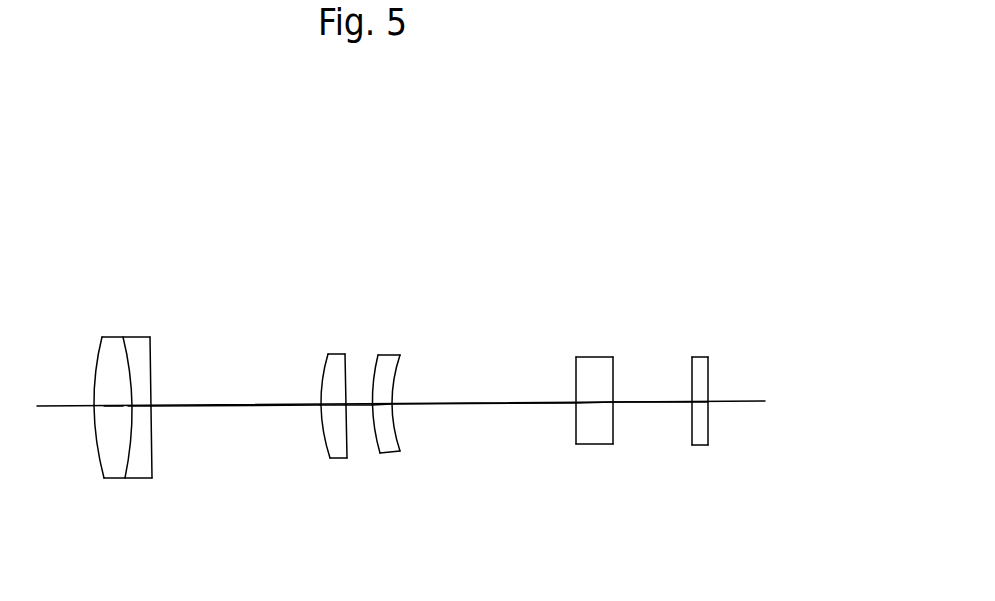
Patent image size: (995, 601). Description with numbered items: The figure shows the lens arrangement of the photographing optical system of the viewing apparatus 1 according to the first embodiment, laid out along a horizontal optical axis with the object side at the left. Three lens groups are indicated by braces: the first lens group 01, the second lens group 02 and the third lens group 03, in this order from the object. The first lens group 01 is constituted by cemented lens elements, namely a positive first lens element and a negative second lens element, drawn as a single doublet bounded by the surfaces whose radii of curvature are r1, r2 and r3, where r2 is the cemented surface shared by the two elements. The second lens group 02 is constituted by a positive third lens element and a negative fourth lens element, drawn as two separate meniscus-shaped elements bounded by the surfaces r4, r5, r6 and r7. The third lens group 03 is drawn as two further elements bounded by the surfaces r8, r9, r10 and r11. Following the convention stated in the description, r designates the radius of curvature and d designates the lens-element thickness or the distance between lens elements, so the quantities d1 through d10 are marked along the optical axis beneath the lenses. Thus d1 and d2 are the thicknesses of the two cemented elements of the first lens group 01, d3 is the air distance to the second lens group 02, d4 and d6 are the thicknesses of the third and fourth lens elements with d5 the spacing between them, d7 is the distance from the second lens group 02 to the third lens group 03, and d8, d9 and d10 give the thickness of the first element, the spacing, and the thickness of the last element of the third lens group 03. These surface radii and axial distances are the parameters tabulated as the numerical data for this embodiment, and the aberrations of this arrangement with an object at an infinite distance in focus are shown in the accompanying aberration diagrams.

The viewing apparatus 1 is at (103, 146).
The first lens group 01 is at (183, 223).
The second lens group 02 is at (473, 220).
The third lens group 03 is at (747, 218).
The radius of curvature of first surface r1 is at (102, 337).
The radius of curvature of second surface r2 is at (123, 337).
The radius of curvature of third surface r3 is at (150, 337).
The radius of curvature of fourth surface r4 is at (330, 354).
The radius of curvature of fifth surface r5 is at (345, 354).
The radius of curvature of sixth surface r6 is at (378, 355).
The radius of curvature of seventh surface r7 is at (398, 355).
The radius of curvature of eighth surface r8 is at (577, 357).
The radius of curvature of ninth surface r9 is at (612, 357).
The radius of curvature of tenth surface r10 is at (692, 357).
The radius of curvature of eleventh surface r11 is at (708, 357).
The thickness of first lens element d1 is at (115, 408).
The thickness of second lens element d2 is at (140, 408).
The distance between first and second lens groups d3 is at (230, 408).
The thickness of third lens element d4 is at (325, 406).
The distance between third and fourth lens elements d5 is at (357, 406).
The thickness of fourth lens element d6 is at (382, 406).
The distance between second and third lens groups d7 is at (490, 406).
The thickness of first element of third lens group d8 is at (593, 403).
The distance between elements of third lens group d9 is at (655, 403).
The thickness of last element of third lens group d10 is at (702, 403).